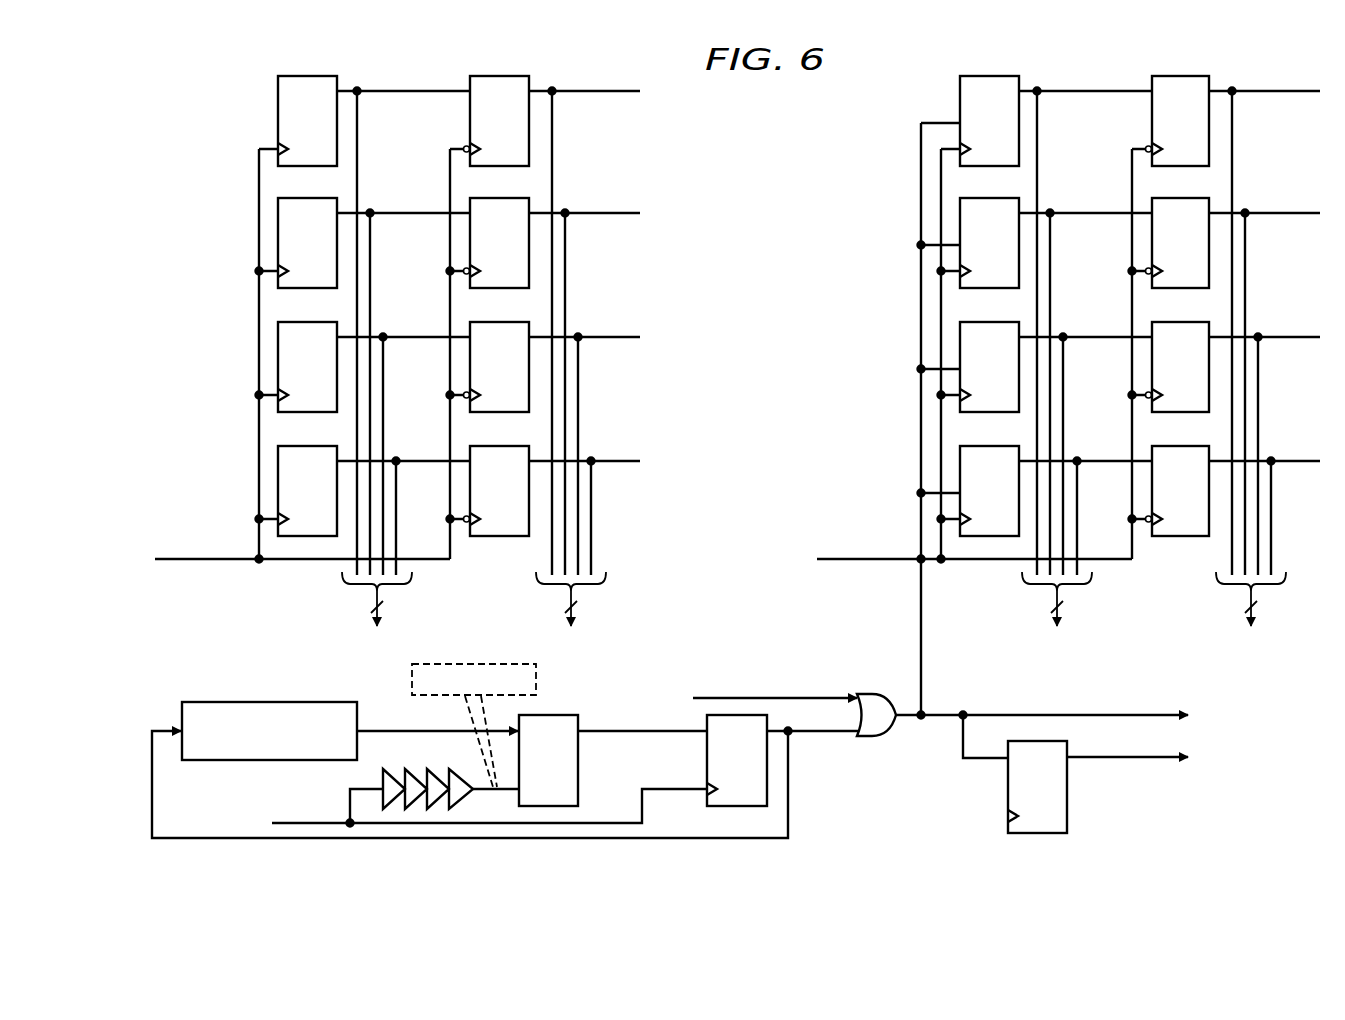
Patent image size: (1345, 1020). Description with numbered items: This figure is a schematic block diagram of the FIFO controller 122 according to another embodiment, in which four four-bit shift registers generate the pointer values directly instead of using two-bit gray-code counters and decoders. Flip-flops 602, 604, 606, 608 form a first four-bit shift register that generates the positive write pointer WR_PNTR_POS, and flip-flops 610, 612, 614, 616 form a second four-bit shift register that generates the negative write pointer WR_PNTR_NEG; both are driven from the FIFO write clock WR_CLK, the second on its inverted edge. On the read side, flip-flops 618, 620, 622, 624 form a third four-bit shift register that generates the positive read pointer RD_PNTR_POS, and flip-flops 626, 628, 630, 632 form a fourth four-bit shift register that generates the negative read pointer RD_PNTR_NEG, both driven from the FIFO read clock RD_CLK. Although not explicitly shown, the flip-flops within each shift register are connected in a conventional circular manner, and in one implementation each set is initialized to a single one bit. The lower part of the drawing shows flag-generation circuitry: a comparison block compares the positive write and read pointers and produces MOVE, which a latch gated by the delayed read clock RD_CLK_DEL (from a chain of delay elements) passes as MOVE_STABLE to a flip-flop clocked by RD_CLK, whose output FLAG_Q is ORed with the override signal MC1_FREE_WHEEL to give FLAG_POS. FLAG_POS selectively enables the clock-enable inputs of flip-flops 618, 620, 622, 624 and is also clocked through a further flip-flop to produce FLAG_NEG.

The FIFO controller 122 is at (778, 98).
The flip-flop 602 is at (297, 76).
The flip-flop 604 is at (297, 198).
The flip-flop 606 is at (297, 322).
The flip-flop 608 is at (297, 446).
The flip-flop 610 is at (489, 76).
The flip-flop 612 is at (489, 198).
The flip-flop 614 is at (489, 322).
The flip-flop 616 is at (489, 446).
The flip-flop 618 is at (979, 76).
The flip-flop 620 is at (979, 198).
The flip-flop 622 is at (979, 322).
The flip-flop 624 is at (979, 446).
The flip-flop 626 is at (1171, 76).
The flip-flop 628 is at (1171, 198).
The flip-flop 630 is at (1171, 322).
The flip-flop 632 is at (1171, 446).